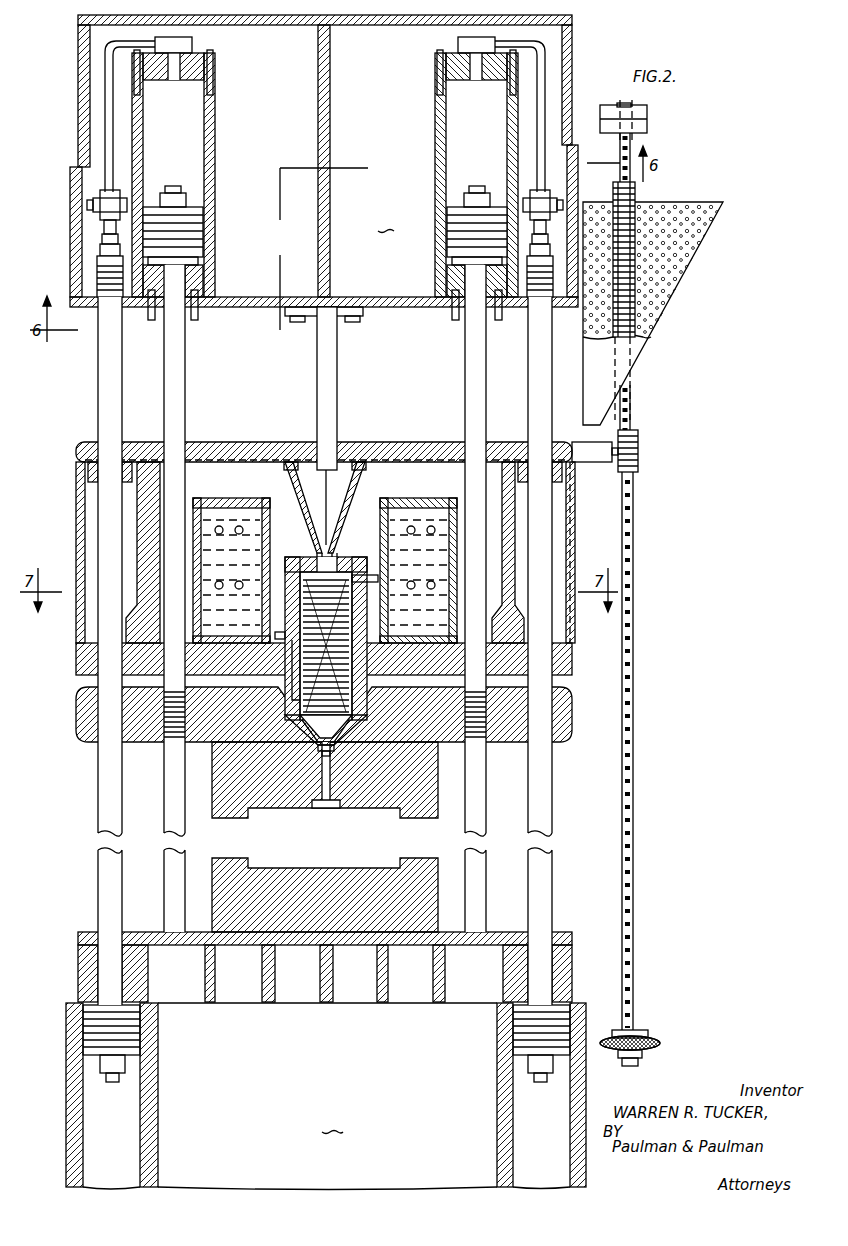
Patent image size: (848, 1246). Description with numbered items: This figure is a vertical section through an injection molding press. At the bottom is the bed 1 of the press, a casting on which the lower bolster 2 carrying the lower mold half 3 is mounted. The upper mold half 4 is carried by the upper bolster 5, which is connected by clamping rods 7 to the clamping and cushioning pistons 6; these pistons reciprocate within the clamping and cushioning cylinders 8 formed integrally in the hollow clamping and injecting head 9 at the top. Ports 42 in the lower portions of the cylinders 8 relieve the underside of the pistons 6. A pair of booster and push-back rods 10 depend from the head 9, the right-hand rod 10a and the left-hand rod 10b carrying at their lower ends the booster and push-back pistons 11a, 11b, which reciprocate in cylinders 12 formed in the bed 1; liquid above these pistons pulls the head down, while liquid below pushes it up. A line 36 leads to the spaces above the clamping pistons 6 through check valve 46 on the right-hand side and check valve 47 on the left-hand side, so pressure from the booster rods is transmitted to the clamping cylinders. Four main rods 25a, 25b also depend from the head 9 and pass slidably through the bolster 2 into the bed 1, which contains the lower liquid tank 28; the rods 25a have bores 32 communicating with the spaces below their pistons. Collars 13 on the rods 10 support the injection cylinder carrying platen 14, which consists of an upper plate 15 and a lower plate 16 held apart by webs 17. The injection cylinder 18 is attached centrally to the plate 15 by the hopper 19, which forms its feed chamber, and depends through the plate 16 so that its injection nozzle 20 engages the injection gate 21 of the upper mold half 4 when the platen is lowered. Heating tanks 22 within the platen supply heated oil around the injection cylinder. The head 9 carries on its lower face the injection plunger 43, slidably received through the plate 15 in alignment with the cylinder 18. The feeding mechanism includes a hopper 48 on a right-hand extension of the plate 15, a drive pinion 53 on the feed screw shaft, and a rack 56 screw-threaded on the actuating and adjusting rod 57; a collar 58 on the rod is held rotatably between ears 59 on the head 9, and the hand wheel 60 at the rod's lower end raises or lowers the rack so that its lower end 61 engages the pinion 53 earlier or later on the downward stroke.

The bed 1 is at (66, 1146).
The lower bolster 2 is at (573, 961).
The lower mold half 3 is at (440, 866).
The upper mold half 4 is at (230, 818).
The upper bolster 5 is at (570, 742).
The clamping and cushioning pistons 6 is at (197, 206).
The clamping rods 7 is at (186, 380).
The clamping and cushioning cylinders 8 is at (215, 141).
The clamping and injecting head 9 is at (573, 63).
The booster and push-back rods 10 is at (304, 428).
The booster and push-back rod 10a is at (548, 804).
The booster and push-back rod 10b is at (98, 820).
The booster and push-back piston 11a is at (515, 1045).
The booster and push-back piston 11b is at (90, 1038).
The cylinders 12 is at (160, 1133).
The collars 13 is at (88, 471).
The injection cylinder carrying platen 14 is at (414, 444).
The upper plate 15 is at (274, 442).
The lower plate 16 is at (566, 676).
The webs 17 is at (516, 591).
The injection cylinder 18 is at (302, 530).
The hopper 19 is at (346, 480).
The injection nozzle 20 is at (323, 745).
The injection gate 21 is at (326, 802).
The heating tanks 22 is at (235, 498).
The main rods 25a is at (466, 346).
The main rods 25b is at (186, 426).
The lower liquid tank 28 is at (327, 1096).
The bores 32 is at (385, 222).
The line 36 is at (106, 78).
The ports 42 is at (204, 263).
The injection plunger 43 is at (317, 363).
The check valve 46 is at (544, 196).
The check valve 47 is at (96, 214).
The hopper 48 is at (692, 262).
The drive pinion 53 is at (640, 455).
The rack 56 is at (634, 379).
The actuating and adjusting rod 57 is at (634, 761).
The collar 58 is at (619, 109).
The ears 59 is at (647, 130).
The hand wheel 60 is at (640, 1041).
The lower end 61 is at (634, 391).